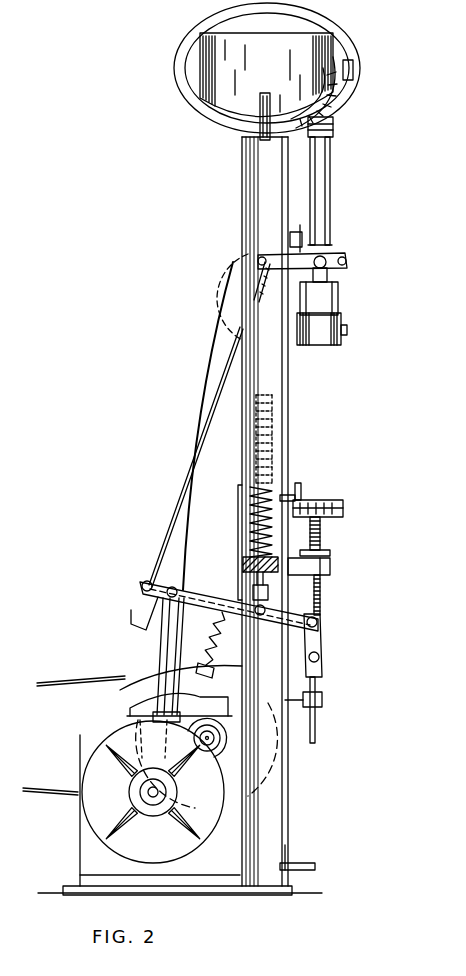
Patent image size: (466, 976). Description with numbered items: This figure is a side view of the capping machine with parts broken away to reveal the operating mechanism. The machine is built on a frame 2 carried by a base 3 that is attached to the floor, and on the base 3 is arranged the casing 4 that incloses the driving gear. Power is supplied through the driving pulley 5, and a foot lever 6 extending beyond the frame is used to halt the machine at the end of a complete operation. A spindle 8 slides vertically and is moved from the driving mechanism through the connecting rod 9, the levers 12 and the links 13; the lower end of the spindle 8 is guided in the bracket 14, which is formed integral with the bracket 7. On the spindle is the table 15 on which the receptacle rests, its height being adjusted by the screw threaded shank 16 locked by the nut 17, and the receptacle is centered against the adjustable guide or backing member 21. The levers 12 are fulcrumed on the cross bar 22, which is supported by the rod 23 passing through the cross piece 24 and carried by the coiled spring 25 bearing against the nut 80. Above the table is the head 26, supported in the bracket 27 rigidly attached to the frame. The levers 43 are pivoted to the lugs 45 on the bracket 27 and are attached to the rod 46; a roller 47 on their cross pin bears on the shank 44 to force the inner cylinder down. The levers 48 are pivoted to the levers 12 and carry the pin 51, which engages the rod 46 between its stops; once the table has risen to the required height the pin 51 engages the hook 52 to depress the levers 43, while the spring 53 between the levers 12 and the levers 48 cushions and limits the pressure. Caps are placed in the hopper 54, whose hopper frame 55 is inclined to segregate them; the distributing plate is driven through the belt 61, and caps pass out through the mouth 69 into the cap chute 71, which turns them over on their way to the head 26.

The frame 2 is at (270, 511).
The base 3 is at (61, 884).
The casing 4 is at (179, 783).
The driving pulley 5 is at (150, 692).
The foot lever 6 is at (300, 866).
The bracket 7 is at (332, 569).
The spindle 8 is at (322, 622).
The connecting rod 9 is at (162, 643).
The levers 12 is at (283, 613).
The links 13 is at (322, 650).
The bracket 14 is at (322, 702).
The table 15 is at (343, 511).
The screw threaded shank 16 is at (322, 536).
The nut 17 is at (332, 554).
The guide or backing member 21 is at (301, 491).
The cross bar 22 is at (258, 618).
The rod 23 is at (255, 592).
The cross piece 24 is at (245, 560).
The coiled spring 25 is at (250, 512).
The head 26 is at (347, 329).
The bracket 27 is at (340, 300).
The levers 43 is at (322, 257).
The shank 44 is at (322, 278).
The lugs 45 is at (347, 260).
The rod 46 is at (198, 436).
The roller 47 is at (257, 256).
The levers 48 is at (147, 580).
The pin 51 is at (142, 586).
The hook 52 is at (130, 619).
The spring 53 is at (212, 636).
The hopper 54 is at (266, 75).
The hopper frame 55 is at (352, 54).
The belt 61 is at (212, 355).
The mouth 69 is at (338, 128).
The cap chute 71 is at (332, 192).
The nut 80 is at (278, 405).